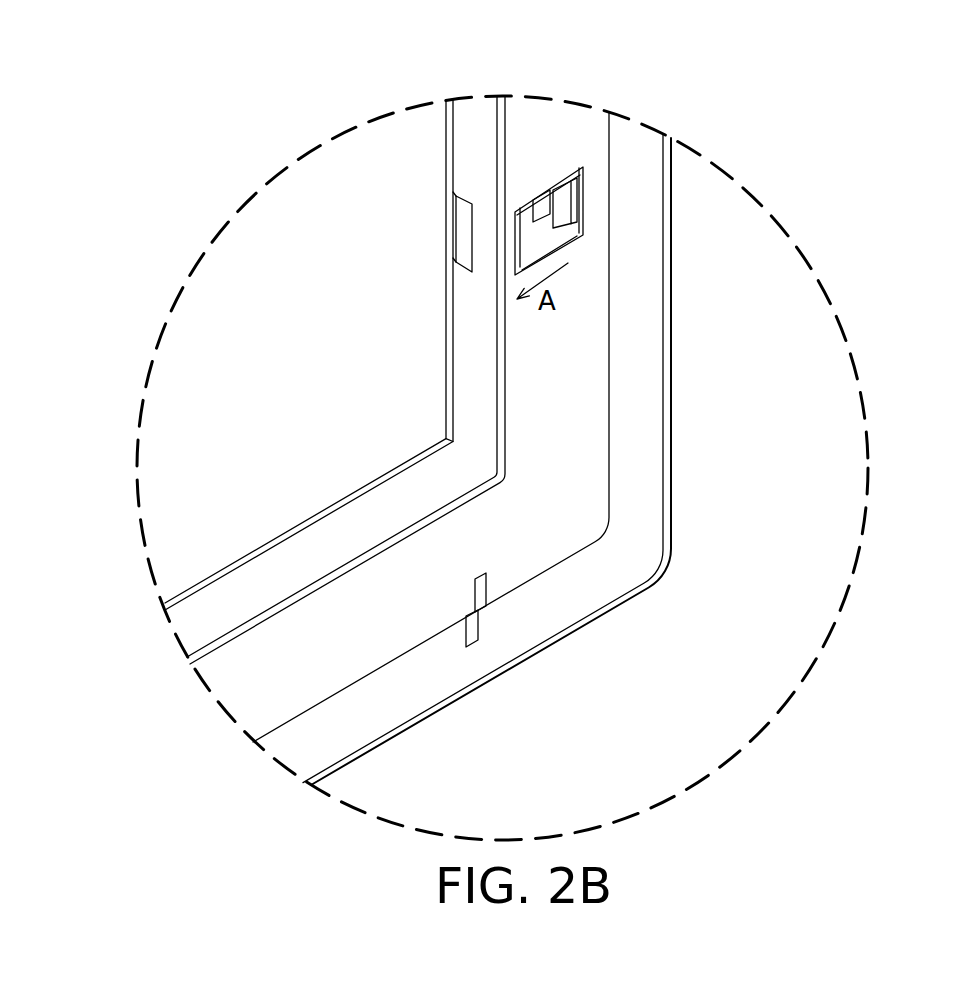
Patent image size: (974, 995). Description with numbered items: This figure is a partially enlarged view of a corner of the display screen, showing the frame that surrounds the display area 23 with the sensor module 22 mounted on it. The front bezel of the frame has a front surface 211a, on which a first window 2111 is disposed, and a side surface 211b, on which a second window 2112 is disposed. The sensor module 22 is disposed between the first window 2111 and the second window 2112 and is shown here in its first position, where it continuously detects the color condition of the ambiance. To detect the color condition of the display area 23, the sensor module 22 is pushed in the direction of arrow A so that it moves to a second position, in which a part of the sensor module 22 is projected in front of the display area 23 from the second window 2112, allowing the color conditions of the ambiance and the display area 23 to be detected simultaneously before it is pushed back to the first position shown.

The display area 23 is at (215, 270).
The side surface 211b is at (470, 317).
The front surface 211a is at (590, 382).
The second window 2112 is at (457, 196).
The sensor module 22 is at (573, 202).
The first window 2111 is at (553, 258).